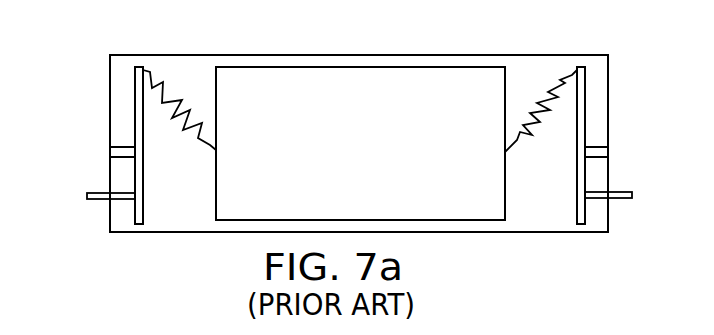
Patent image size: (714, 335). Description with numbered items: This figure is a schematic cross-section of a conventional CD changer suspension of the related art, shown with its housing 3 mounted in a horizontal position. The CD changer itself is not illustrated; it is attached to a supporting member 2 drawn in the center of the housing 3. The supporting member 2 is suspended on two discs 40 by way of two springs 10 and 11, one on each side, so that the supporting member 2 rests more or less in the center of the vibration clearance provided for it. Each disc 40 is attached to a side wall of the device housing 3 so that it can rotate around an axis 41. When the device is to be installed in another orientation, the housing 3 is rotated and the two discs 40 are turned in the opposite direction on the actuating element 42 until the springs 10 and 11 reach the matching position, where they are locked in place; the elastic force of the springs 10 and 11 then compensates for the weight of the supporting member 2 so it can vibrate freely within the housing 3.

The supporting member 2 is at (505, 200).
The housing 3 is at (383, 55).
The spring 10 is at (170, 88).
The spring 11 is at (543, 90).
The disc 40 is at (135, 112).
The axis 41 is at (590, 146).
The actuating element 42 is at (614, 199).